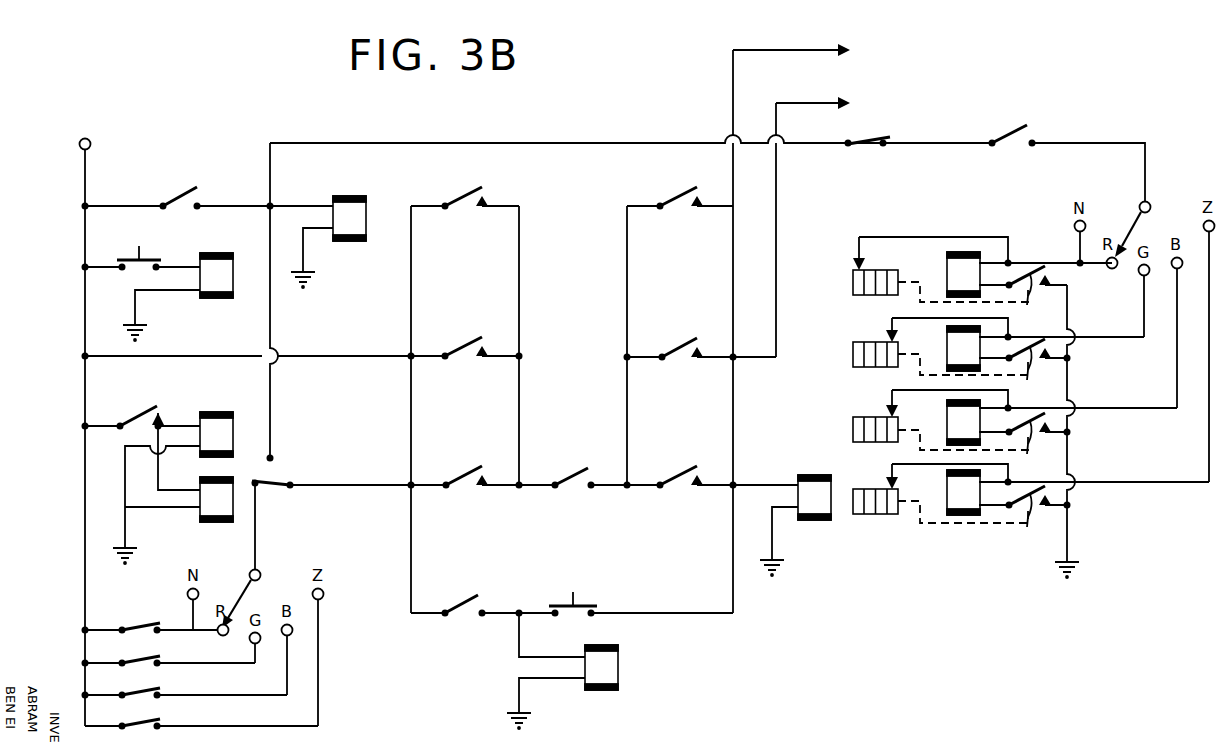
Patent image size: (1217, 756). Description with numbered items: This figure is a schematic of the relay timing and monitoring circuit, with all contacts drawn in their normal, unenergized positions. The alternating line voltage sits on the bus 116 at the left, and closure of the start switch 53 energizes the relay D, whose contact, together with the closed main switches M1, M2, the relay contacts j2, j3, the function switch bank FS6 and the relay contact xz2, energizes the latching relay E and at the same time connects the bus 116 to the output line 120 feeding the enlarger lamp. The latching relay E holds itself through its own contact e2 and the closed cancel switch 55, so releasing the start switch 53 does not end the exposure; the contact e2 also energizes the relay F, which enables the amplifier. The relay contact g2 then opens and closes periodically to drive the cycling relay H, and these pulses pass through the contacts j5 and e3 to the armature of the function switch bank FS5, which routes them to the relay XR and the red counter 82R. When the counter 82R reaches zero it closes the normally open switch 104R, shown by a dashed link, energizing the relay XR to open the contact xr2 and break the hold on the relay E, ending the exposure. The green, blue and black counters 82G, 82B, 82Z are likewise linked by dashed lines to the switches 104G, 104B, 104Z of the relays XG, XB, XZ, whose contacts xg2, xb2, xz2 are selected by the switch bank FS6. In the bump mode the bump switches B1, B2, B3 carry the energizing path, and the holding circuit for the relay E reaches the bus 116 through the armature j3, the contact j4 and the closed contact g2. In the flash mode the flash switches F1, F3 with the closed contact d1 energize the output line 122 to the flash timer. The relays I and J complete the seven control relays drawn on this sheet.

The bus 116 is at (85, 238).
The start switch 53 is at (140, 266).
The cancel switch 55 is at (581, 615).
The output line 120 is at (808, 103).
The output line to the flash timer circuits 122 is at (790, 50).
The red counter 82R is at (853, 282).
The green counter 82G is at (853, 356).
The blue counter 82B is at (853, 430).
The black counter 82Z is at (878, 514).
The normally open switch 104R is at (1023, 299).
The normally open switch 104G is at (1025, 371).
The normally open switch 104B is at (1025, 445).
The normally open switch 104Z is at (1025, 520).
The relay contact g2 is at (183, 194).
The bump switch B1 is at (137, 414).
The bump switch B2 is at (474, 344).
The bump switch B3 is at (691, 346).
The flash switch F1 is at (470, 194).
The flash switch F3 is at (676, 197).
The main switch M1 is at (457, 474).
The main switch M2 is at (688, 472).
The relay contact d1 is at (576, 474).
The relay contact e2 is at (464, 602).
The relay contact e3 is at (1016, 138).
The relay contact j2 is at (264, 484).
The relay armature j3 is at (278, 490).
The relay contact j4 is at (278, 457).
The relay contact j5 is at (870, 148).
The function switch bank FS5 is at (1130, 215).
The function switch bank FS6 is at (243, 594).
The relay contact xr2 is at (142, 622).
The relay contact xg2 is at (148, 656).
The relay contact xb2 is at (148, 688).
The relay contact xz2 is at (148, 720).
The relay D is at (178, 297).
The latching relay E is at (795, 525).
The relay F is at (562, 671).
The cycling relay H is at (318, 242).
The relay I is at (173, 488).
The relay J is at (179, 499).
The relay XR is at (1029, 274).
The relay XG is at (1045, 348).
The relay XB is at (1062, 422).
The relay XZ is at (1078, 492).